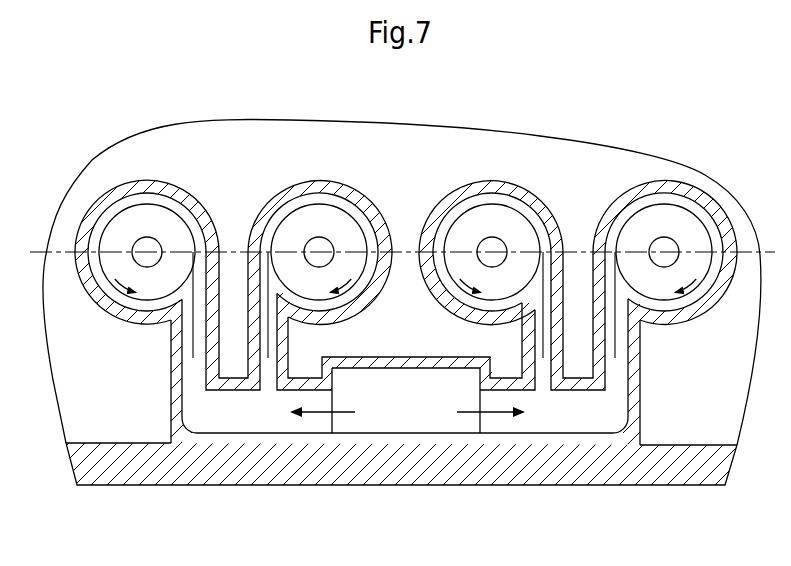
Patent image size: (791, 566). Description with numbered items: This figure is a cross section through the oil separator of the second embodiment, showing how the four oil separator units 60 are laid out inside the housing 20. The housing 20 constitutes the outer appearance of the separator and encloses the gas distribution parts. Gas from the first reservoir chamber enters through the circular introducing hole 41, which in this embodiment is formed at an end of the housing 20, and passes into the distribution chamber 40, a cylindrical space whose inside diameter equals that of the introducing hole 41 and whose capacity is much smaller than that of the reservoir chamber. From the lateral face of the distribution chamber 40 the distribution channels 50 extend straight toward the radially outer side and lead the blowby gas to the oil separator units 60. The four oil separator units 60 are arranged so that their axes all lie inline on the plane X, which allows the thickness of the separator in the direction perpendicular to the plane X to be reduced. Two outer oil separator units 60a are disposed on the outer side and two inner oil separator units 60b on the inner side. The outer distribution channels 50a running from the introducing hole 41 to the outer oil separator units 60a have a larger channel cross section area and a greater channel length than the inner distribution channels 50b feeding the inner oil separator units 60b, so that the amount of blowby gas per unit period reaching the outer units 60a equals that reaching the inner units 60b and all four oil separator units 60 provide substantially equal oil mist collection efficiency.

The housing 20 is at (403, 486).
The distribution chamber 40 is at (427, 415).
The introducing hole 41 is at (362, 418).
The distribution channel 50 is at (402, 348).
The outer distribution channel 50a is at (195, 375).
The inner distribution channel 50b is at (273, 357).
The oil separator unit 60 is at (406, 219).
The outer oil separator unit 60a is at (124, 181).
The inner oil separator unit 60b is at (311, 178).
The plane X is at (402, 250).